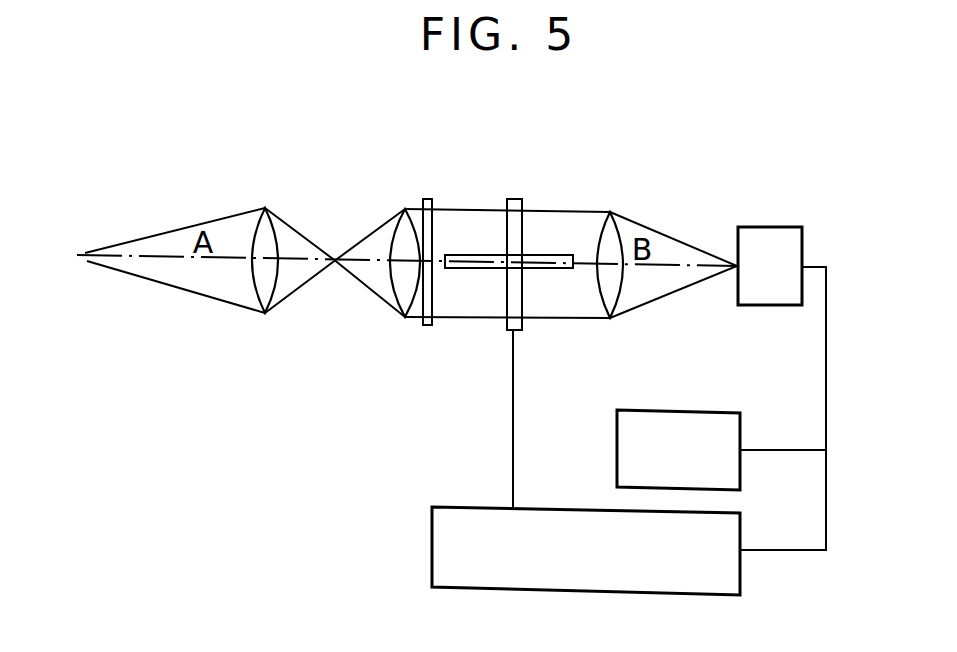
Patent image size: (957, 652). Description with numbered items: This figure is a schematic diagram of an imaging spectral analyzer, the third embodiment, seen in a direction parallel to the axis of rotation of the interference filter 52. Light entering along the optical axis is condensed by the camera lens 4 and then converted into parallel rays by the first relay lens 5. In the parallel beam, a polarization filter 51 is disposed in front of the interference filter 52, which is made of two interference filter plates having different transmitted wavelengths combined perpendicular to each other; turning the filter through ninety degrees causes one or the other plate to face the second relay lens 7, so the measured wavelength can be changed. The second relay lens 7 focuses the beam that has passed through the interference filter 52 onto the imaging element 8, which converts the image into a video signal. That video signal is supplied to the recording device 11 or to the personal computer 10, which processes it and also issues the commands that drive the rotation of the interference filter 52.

The camera lens 4 is at (273, 208).
The first relay lens 5 is at (402, 214).
The polarization filter 51 is at (430, 200).
The interference filter 52 is at (517, 200).
The second relay lens 7 is at (618, 216).
The imaging element 8 is at (770, 227).
The personal computer 10 is at (741, 528).
The recording device 11 is at (703, 410).